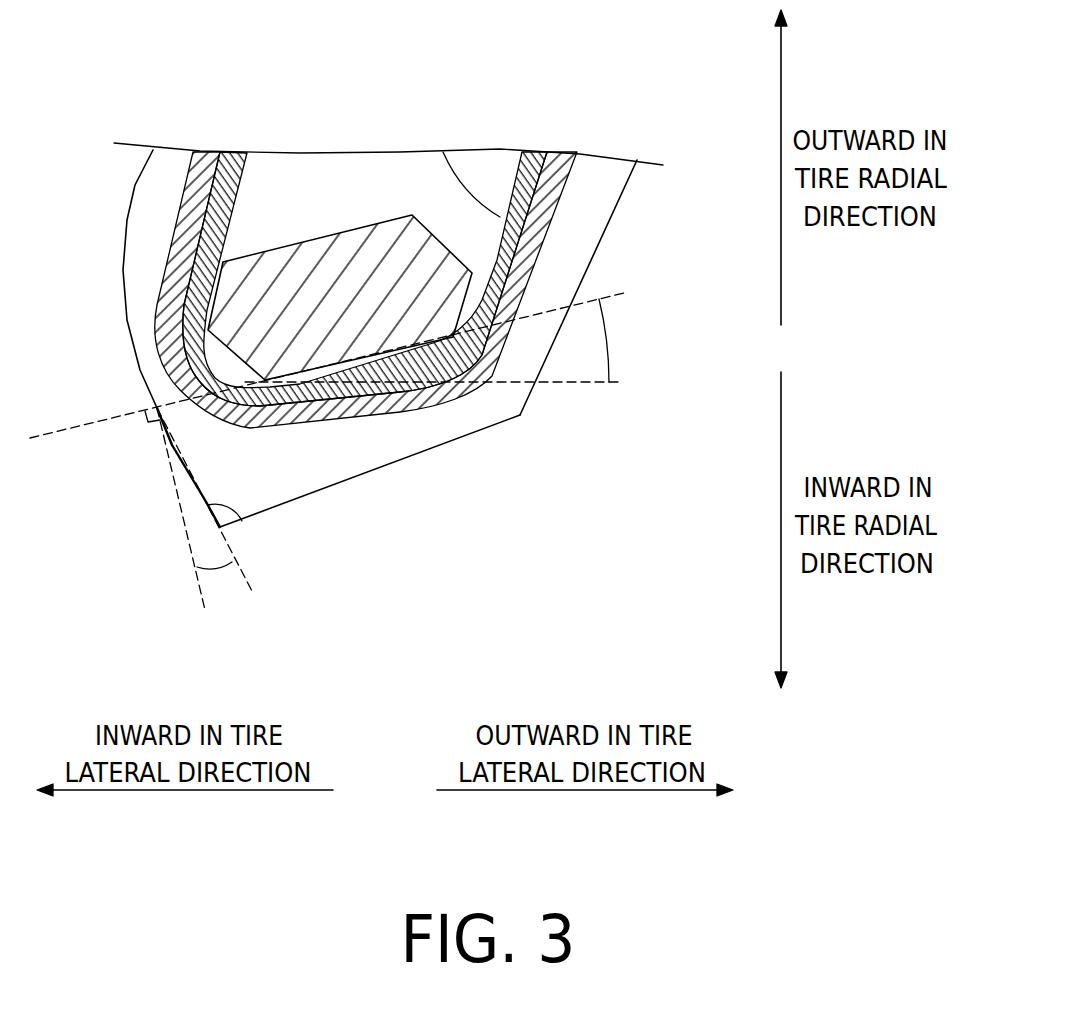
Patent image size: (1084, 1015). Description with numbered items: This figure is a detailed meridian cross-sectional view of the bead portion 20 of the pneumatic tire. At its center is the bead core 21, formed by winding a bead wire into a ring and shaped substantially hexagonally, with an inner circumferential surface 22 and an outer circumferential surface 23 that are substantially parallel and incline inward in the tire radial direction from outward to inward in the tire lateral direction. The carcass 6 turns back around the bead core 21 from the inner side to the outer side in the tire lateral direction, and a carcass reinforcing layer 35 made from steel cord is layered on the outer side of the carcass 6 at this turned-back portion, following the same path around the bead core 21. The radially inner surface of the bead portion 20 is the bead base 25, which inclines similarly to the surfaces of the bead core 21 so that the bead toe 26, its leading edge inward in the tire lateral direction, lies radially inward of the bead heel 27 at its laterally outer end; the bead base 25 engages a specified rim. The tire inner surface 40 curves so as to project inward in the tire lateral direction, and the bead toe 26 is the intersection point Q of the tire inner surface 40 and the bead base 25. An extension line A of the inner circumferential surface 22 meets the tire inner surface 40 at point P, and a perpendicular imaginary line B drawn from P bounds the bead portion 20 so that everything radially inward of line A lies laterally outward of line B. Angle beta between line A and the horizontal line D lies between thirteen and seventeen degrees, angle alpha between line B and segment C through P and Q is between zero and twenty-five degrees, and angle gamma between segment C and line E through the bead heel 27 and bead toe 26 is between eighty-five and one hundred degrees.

The carcass 6 is at (250, 185).
The bead portion 20 is at (520, 106).
The bead core 21 is at (300, 268).
The inner circumferential surface 22 is at (372, 360).
The outer circumferential surface 23 is at (353, 236).
The bead base 25 is at (472, 433).
The bead toe 26 is at (222, 530).
The bead heel 27 is at (520, 415).
The carcass reinforcing layer 35 is at (180, 200).
The tire inner surface 40 is at (123, 265).